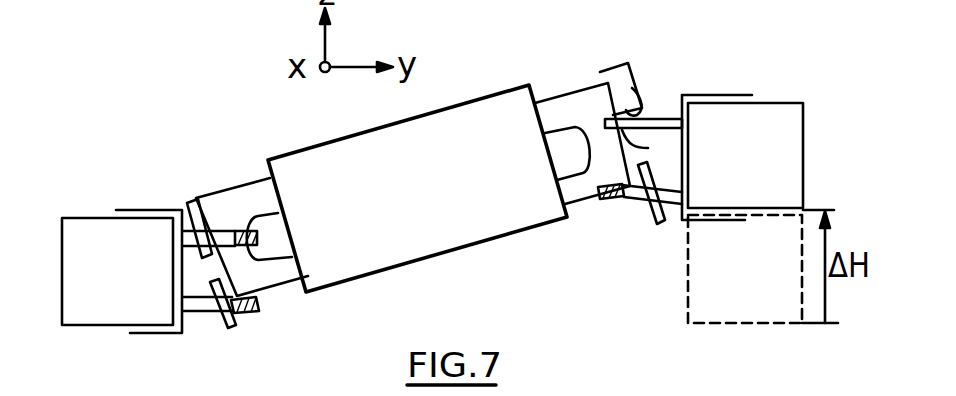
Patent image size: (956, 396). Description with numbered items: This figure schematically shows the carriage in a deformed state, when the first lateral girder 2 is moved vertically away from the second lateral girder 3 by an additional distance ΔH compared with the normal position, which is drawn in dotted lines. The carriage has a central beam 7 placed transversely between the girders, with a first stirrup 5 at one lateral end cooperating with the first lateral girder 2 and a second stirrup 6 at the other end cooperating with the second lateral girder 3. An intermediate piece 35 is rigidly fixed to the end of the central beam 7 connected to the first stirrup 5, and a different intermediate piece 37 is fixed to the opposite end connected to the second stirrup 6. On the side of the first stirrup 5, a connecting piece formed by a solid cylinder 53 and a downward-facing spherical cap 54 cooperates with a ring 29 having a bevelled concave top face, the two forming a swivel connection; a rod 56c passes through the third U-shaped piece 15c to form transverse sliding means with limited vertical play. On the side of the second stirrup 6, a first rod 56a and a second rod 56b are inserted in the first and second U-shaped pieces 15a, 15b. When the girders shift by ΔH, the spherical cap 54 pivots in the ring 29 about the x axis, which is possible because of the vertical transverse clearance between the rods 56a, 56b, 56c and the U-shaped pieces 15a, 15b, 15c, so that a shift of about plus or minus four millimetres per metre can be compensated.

The first lateral girder 2 is at (778, 128).
The second lateral girder 3 is at (60, 265).
The first stirrup 5 is at (718, 94).
The second stirrup 6 is at (138, 209).
The central beam 7 is at (382, 163).
The first U-shaped piece 15a is at (237, 230).
The second U-shaped piece 15b is at (190, 315).
The third U-shaped piece 15c is at (601, 200).
The ring 29 is at (648, 148).
The intermediate piece 35 is at (565, 105).
The intermediate piece 37 is at (241, 176).
The solid cylinder 53 is at (617, 82).
The spherical cap 54 is at (633, 90).
The first rod 56a is at (201, 199).
The second rod 56b is at (230, 316).
The rod 56c is at (658, 226).